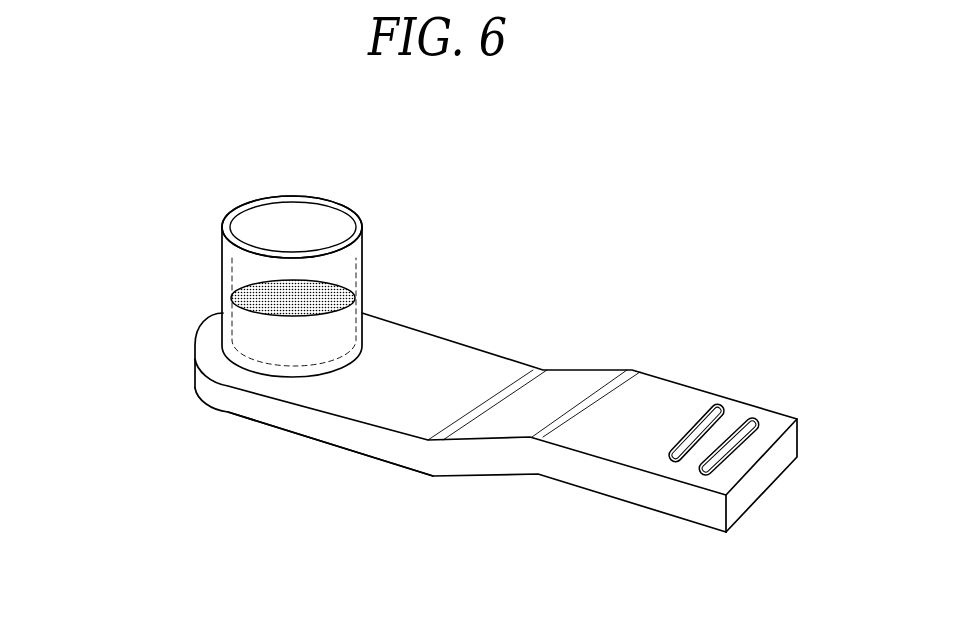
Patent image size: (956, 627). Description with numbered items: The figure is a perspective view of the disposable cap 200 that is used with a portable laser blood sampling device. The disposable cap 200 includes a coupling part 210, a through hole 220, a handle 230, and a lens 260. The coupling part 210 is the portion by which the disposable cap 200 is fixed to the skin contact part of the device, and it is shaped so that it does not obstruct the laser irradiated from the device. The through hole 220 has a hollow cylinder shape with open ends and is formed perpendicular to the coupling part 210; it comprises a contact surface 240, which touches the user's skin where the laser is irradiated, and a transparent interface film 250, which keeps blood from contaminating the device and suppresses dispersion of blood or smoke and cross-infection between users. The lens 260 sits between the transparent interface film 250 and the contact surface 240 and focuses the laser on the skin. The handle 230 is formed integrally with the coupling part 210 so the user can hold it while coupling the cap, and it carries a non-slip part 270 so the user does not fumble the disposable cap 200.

The disposable cap 200 is at (505, 183).
The coupling part 210 is at (203, 330).
The through hole 220 is at (333, 272).
The handle 230 is at (660, 398).
The contact surface 240 is at (290, 197).
The transparent interface film 250 is at (272, 425).
The lens 260 is at (257, 300).
The non-slip part 270 is at (755, 404).